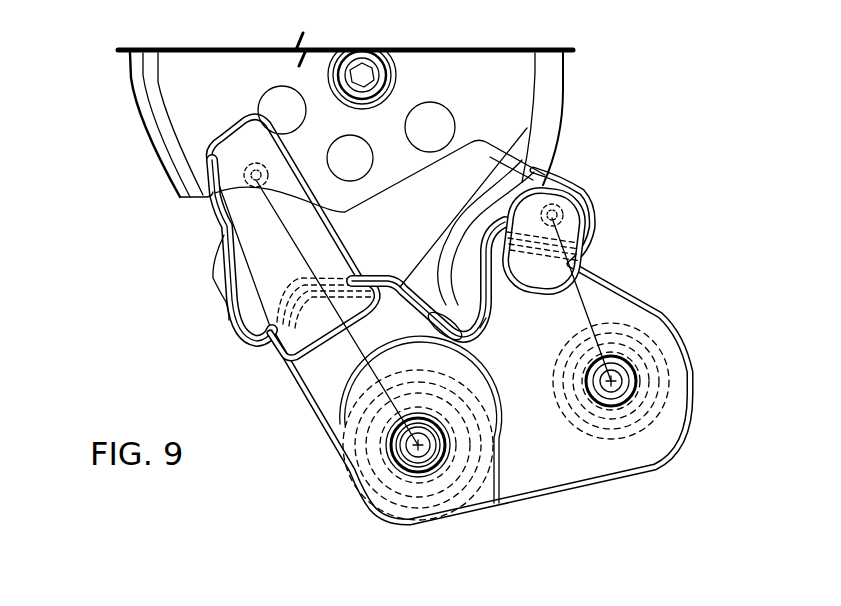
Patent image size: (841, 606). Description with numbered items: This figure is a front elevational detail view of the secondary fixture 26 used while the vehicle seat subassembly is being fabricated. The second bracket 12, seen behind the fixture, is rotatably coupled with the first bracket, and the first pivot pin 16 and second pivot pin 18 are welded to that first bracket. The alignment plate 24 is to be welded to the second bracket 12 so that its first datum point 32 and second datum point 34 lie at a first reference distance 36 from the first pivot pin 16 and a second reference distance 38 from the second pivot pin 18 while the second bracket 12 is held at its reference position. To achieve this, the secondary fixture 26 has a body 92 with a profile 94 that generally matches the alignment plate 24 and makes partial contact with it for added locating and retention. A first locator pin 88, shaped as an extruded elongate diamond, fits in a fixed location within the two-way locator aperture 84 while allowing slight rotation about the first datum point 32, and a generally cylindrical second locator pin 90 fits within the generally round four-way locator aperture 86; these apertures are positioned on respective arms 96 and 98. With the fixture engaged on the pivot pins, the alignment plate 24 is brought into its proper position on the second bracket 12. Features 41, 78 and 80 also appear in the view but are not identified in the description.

The second bracket 12 is at (527, 100).
The first pivot pin 16 is at (400, 457).
The second pivot pin 18 is at (625, 375).
The alignment plate 24 is at (250, 305).
The secondary fixture 26 is at (563, 478).
The first datum point 32 is at (258, 166).
The second datum point 34 is at (542, 213).
The first reference distance 36 is at (307, 255).
The second reference distance 38 is at (582, 305).
The boss 41 is at (356, 72).
The first bolt 78 is at (395, 443).
The second bolt 80 is at (612, 353).
The locator aperture 84 is at (247, 182).
The locator aperture 86 is at (593, 228).
The first locator pin 88 is at (244, 175).
The second locator pin 90 is at (596, 200).
The body 92 is at (325, 392).
The profile 94 is at (460, 345).
The arm 96 is at (258, 261).
The arm 98 is at (573, 250).